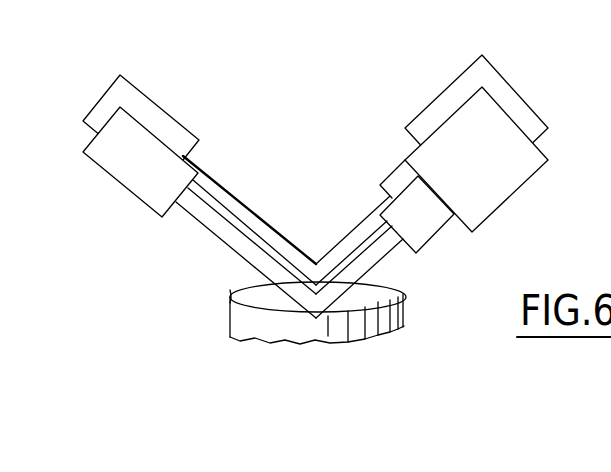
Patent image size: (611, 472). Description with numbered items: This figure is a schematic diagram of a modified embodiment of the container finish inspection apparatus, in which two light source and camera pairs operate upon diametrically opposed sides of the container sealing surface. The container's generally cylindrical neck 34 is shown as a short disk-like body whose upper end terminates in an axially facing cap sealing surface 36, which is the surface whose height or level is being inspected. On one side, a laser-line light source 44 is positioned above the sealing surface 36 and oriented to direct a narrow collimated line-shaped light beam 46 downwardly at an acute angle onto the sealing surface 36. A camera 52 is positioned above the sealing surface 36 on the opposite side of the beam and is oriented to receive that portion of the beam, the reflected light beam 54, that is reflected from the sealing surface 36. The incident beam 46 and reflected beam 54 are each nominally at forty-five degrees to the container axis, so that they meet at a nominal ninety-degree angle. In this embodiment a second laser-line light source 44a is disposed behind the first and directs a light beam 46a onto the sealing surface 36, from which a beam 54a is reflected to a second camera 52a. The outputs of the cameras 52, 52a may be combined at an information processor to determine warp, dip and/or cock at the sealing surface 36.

The neck 34 is at (238, 322).
The sealing surface 36 is at (228, 289).
The light source 44 is at (128, 194).
The second laser-line light source 44a is at (168, 118).
The collimated light beam 46 is at (240, 247).
The light beam 46a is at (241, 205).
The camera 52 is at (495, 200).
The second camera 52a is at (451, 86).
The reflected light beam 54 is at (381, 258).
The reflected beam 54a is at (352, 232).